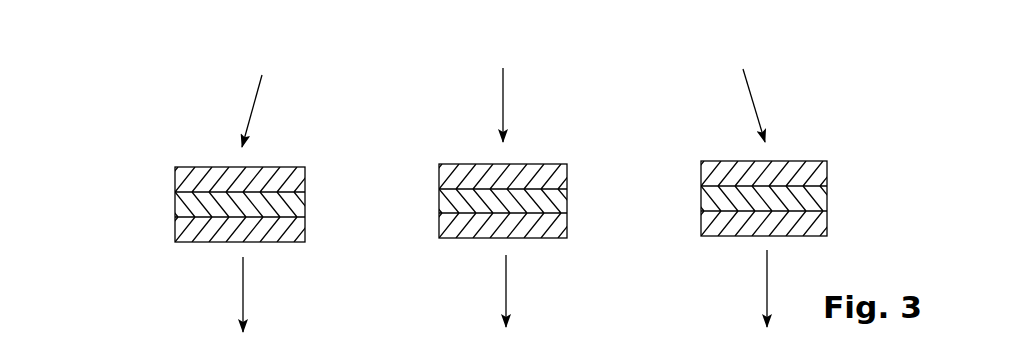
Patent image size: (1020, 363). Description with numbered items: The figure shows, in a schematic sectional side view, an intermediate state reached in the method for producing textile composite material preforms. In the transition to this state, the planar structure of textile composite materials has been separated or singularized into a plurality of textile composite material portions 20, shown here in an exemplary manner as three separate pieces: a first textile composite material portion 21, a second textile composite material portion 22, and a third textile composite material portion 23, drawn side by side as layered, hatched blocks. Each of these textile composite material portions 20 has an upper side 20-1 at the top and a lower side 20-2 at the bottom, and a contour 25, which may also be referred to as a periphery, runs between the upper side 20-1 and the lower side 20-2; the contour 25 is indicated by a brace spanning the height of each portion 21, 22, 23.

The textile composite material portions 20 is at (144, 195).
The upper side 20-1 is at (192, 166).
The lower side 20-2 is at (178, 243).
The first textile composite material portion 21 is at (283, 156).
The second textile composite material portion 22 is at (547, 157).
The third textile composite material portion 23 is at (808, 152).
The contour 25 is at (320, 167).